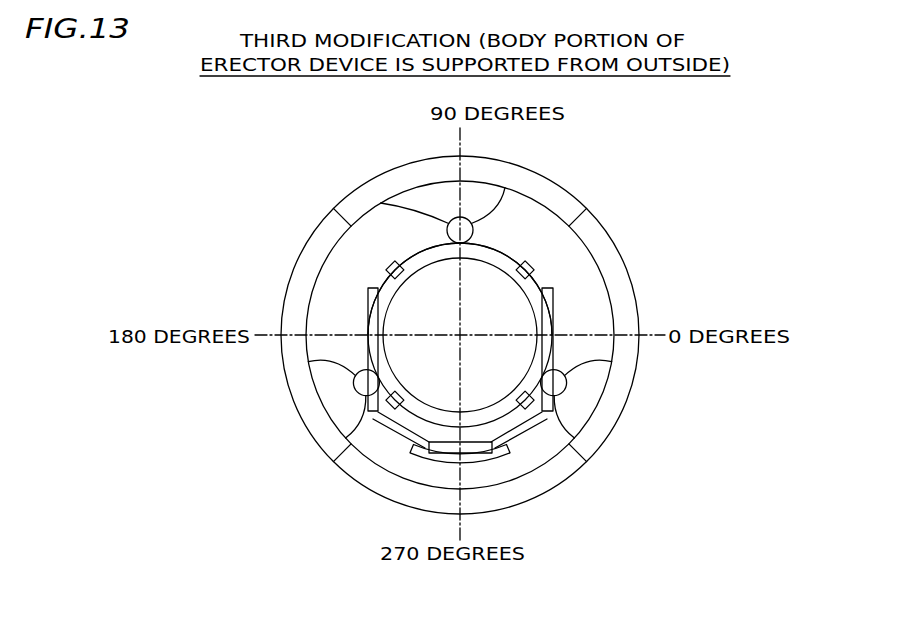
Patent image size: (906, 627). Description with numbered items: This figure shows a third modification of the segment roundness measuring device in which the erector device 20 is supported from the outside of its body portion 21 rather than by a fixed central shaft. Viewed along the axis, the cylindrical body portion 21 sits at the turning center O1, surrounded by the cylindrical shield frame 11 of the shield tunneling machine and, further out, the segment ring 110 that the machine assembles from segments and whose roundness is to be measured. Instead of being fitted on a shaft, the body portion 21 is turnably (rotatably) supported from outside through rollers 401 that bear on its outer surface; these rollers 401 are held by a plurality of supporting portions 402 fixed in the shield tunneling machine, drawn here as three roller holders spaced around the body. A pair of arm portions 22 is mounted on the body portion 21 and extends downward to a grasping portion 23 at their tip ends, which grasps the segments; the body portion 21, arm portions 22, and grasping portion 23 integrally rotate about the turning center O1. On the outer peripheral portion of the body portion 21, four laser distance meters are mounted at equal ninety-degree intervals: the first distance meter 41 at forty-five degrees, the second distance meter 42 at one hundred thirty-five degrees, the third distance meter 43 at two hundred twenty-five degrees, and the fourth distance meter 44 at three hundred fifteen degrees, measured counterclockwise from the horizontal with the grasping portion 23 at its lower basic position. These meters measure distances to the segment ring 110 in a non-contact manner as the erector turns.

The shield frame 11 is at (604, 306).
The segment ring 110 is at (571, 189).
The erector device 20 is at (517, 238).
The body portion 21 is at (384, 259).
The arm portions 22 is at (568, 402).
The grasping portion 23 is at (412, 460).
The first distance meter 41 is at (537, 266).
The second distance meter 42 is at (385, 267).
The third distance meter 43 is at (385, 405).
The fourth distance meter 44 is at (537, 405).
The rollers 401 is at (447, 226).
The supporting portions 402 is at (445, 190).
The turning center O1 is at (460, 335).